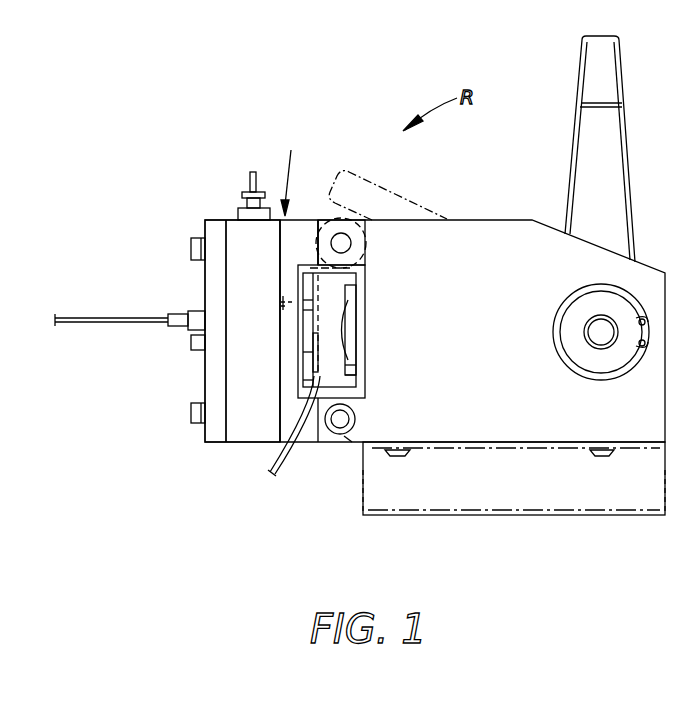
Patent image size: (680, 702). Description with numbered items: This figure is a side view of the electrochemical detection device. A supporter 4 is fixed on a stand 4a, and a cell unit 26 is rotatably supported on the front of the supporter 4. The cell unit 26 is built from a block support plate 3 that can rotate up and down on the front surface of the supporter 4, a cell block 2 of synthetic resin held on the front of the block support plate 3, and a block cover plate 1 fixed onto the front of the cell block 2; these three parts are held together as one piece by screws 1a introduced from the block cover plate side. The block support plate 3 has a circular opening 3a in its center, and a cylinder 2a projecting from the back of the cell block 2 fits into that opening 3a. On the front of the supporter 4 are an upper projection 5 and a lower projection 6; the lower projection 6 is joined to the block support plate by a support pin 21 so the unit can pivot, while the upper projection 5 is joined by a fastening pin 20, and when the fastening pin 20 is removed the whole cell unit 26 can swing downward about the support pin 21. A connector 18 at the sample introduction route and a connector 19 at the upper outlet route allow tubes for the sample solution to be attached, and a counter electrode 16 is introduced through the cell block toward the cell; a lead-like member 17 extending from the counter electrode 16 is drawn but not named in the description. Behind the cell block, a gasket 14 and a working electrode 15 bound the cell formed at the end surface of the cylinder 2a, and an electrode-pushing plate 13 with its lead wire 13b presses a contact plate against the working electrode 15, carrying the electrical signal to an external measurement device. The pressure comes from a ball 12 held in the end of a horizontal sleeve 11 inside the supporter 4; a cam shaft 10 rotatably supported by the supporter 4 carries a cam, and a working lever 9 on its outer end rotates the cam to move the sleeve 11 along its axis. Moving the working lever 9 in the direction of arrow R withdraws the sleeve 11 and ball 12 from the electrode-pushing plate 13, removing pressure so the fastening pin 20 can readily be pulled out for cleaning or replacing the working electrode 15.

The block cover plate 1 is at (217, 432).
The screws 1a is at (190, 248).
The cell block 2 is at (238, 243).
The cylinder 2a is at (297, 364).
The block support plate 3 is at (301, 235).
The circular opening 3a is at (283, 320).
The supporter 4 is at (587, 262).
The stand 4a is at (460, 518).
The projection 5 is at (355, 218).
The projection 6 is at (335, 437).
The working lever 9 is at (603, 162).
The cam shaft 10 is at (596, 348).
The sleeve 11 is at (360, 365).
The ball 12 is at (355, 328).
The electrode-pushing plate 13 is at (340, 282).
The lead wire 13b is at (288, 462).
The gasket 14 is at (297, 378).
The working electrode 15 is at (297, 341).
The counter electrode 16 is at (190, 315).
The wire 17 is at (80, 323).
The connector 18 is at (190, 342).
The connector 19 is at (250, 183).
The fastening pin 20 is at (350, 240).
The support pin 21 is at (348, 442).
The cell unit 26 is at (284, 170).